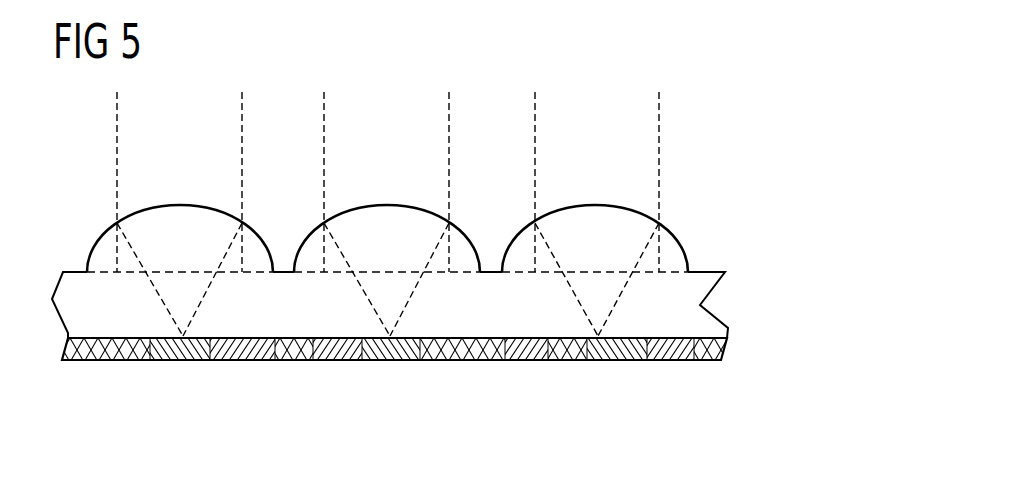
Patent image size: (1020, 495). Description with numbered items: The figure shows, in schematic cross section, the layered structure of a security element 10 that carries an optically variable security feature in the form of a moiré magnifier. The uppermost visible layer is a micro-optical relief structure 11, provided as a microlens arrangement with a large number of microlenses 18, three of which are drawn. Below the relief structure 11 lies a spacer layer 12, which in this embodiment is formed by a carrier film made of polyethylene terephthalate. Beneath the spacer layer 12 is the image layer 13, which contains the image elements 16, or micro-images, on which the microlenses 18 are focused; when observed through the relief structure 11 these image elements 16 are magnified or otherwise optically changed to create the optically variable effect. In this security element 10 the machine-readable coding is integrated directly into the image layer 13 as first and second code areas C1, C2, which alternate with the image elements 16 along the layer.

The security element 10 is at (692, 143).
The micro-optical relief structure 11 is at (697, 233).
The spacer layer 12 is at (709, 305).
The image layer 13 is at (740, 347).
The image elements 16 is at (174, 352).
The microlenses 18 is at (178, 219).
The first code area C1 is at (245, 350).
The second code area C2 is at (100, 350).